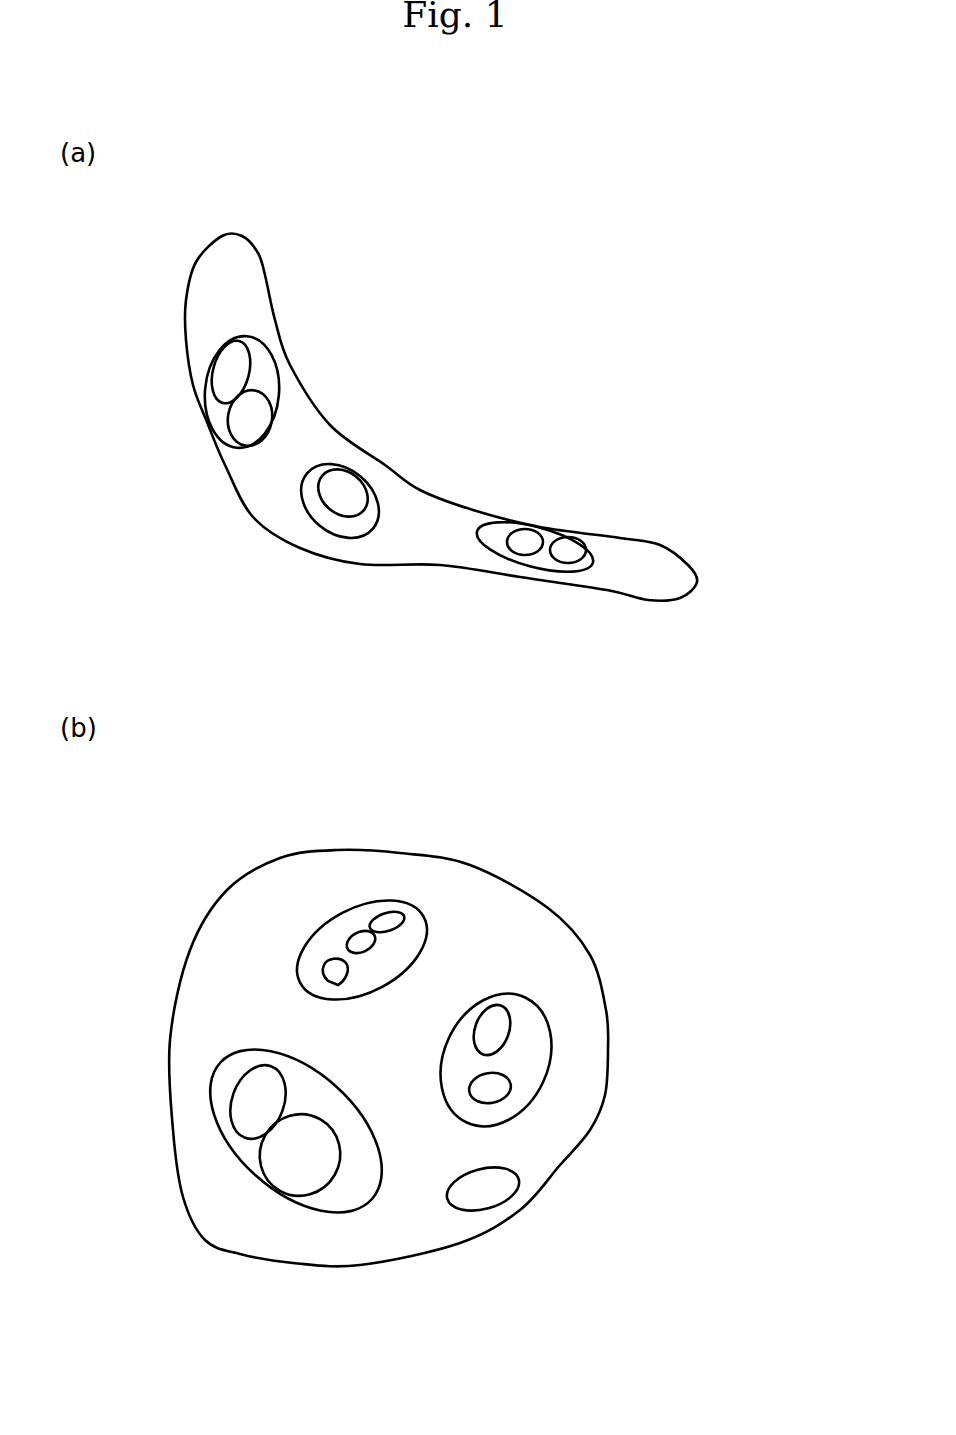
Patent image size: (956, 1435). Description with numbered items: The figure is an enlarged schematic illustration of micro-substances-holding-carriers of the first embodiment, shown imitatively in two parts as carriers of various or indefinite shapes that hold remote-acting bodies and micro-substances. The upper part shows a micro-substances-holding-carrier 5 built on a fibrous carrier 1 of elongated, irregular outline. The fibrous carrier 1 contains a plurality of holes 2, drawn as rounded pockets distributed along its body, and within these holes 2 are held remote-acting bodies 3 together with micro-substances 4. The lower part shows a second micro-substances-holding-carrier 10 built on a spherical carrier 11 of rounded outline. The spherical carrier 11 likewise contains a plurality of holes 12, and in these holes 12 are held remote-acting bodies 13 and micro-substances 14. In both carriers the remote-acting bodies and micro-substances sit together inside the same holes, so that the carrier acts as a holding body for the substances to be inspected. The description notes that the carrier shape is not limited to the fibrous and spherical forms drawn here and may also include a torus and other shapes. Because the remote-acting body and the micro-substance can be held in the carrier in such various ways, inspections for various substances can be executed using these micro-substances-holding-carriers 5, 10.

The fibrous carrier 1 is at (245, 240).
The holes 2 is at (272, 365).
The remote-acting bodies 3 is at (222, 372).
The micro-substances 4 is at (340, 502).
The micro-substances-holding-carrier 5 is at (438, 461).
The micro-substances-holding-carrier 10 is at (571, 906).
The spherical carrier 11 is at (387, 852).
The holes 12 is at (419, 940).
The remote-acting bodies 13 is at (377, 915).
The micro-substances 14 is at (240, 1125).